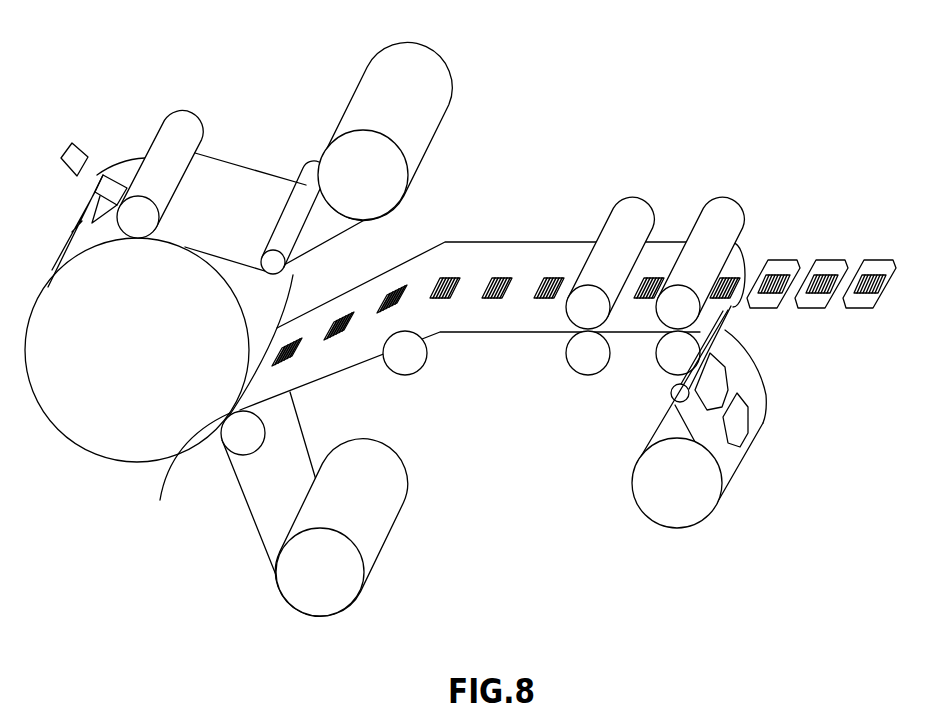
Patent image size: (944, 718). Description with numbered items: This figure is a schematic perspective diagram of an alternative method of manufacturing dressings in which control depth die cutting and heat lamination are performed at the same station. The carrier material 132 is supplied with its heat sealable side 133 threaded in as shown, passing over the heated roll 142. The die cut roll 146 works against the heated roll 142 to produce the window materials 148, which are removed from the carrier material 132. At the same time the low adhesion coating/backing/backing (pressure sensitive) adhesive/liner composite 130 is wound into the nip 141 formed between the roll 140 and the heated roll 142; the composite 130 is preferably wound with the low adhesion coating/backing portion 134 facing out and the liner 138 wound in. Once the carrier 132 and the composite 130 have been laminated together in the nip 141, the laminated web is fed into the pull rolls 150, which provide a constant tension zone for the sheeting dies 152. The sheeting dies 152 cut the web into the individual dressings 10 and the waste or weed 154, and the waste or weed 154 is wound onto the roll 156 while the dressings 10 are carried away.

The dressing 10 is at (872, 262).
The low adhesion coating/backing/adhesive/liner composite 130 is at (302, 597).
The carrier material 132 is at (396, 194).
The heat sealable side 133 is at (253, 180).
The low adhesion coating/backing portion 134 is at (392, 478).
The liner 138 is at (290, 430).
The roll 140 is at (233, 435).
The nip 141 is at (185, 473).
The heated roll 142 is at (130, 445).
The die cut roll 146 is at (182, 120).
The window material 148 is at (78, 152).
The pull rolls 150 is at (627, 208).
The sheeting dies 152 is at (722, 208).
The waste or weed 154 is at (752, 362).
The roll 156 is at (687, 513).